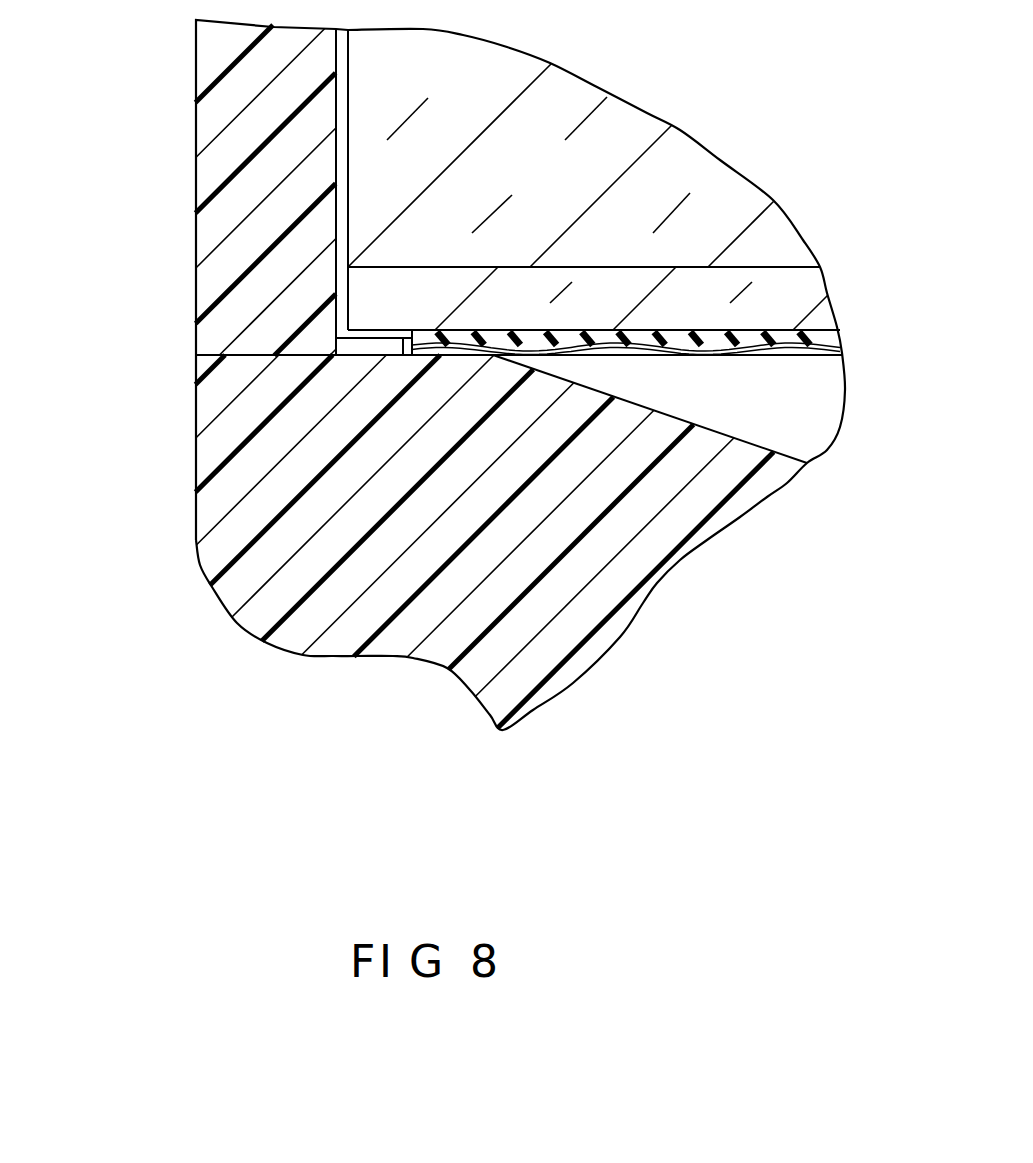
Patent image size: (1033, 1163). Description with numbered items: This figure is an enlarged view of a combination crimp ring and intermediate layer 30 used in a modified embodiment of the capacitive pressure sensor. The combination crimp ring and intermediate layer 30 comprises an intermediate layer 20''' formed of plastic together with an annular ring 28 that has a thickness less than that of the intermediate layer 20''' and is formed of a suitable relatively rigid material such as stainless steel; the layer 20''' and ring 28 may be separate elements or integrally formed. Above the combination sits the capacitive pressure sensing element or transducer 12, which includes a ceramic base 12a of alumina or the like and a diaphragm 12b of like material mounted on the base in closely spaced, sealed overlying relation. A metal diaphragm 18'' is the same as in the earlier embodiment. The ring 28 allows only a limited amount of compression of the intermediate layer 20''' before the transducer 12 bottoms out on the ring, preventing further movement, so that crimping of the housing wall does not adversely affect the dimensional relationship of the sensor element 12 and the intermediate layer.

The capacitive pressure sensing element 12 is at (348, 183).
The ceramic base 12a is at (670, 163).
The diaphragm 12b is at (393, 302).
The metal diaphragm 18'' is at (681, 224).
The intermediate layer 20''' is at (646, 481).
The annular ring 28 is at (380, 547).
The combination crimp ring and intermediate layer 30 is at (349, 357).